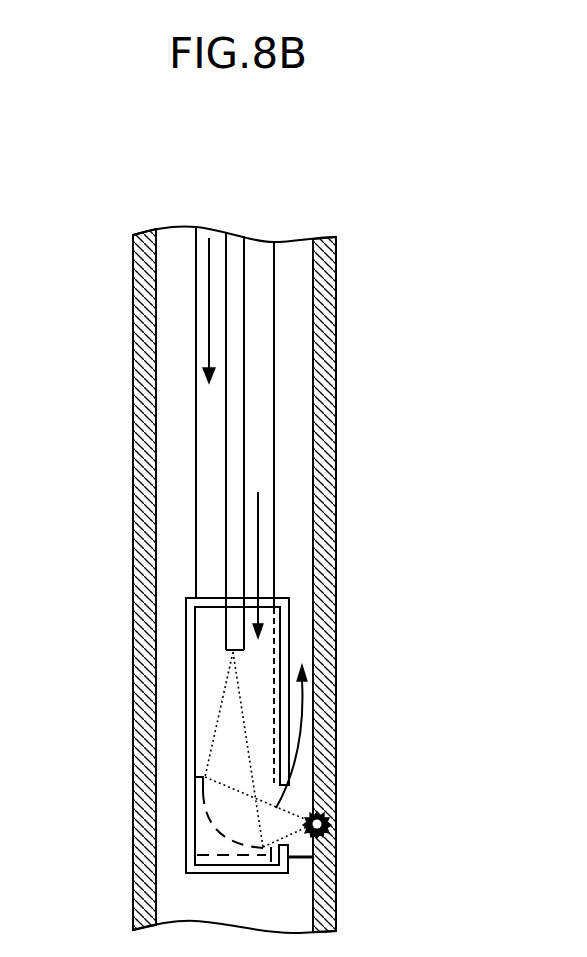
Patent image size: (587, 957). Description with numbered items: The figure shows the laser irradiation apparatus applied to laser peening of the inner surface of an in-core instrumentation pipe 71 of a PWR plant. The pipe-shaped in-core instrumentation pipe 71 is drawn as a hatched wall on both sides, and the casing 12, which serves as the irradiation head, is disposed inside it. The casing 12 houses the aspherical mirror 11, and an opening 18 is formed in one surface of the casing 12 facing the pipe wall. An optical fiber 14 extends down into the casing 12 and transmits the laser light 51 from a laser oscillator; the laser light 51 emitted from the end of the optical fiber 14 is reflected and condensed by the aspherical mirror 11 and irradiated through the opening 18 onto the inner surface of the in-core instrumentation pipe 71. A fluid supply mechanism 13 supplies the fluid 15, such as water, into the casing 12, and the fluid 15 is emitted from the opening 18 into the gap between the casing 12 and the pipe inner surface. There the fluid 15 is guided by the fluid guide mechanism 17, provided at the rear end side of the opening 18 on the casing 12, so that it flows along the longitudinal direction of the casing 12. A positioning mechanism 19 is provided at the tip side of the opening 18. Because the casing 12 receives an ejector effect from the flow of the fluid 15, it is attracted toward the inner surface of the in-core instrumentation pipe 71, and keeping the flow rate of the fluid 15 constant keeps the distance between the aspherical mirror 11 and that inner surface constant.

The in-core instrumentation pipe 71 is at (323, 305).
The fluid supply mechanism 13 is at (257, 345).
The optical fiber 14 is at (235, 463).
The fluid 15 is at (258, 538).
The fluid guide mechanism 17 is at (275, 620).
The casing 12 is at (188, 666).
The aspherical mirror 11 is at (203, 832).
The opening 18 is at (272, 794).
The laser light 51 is at (336, 857).
The positioning mechanism 19 is at (293, 863).